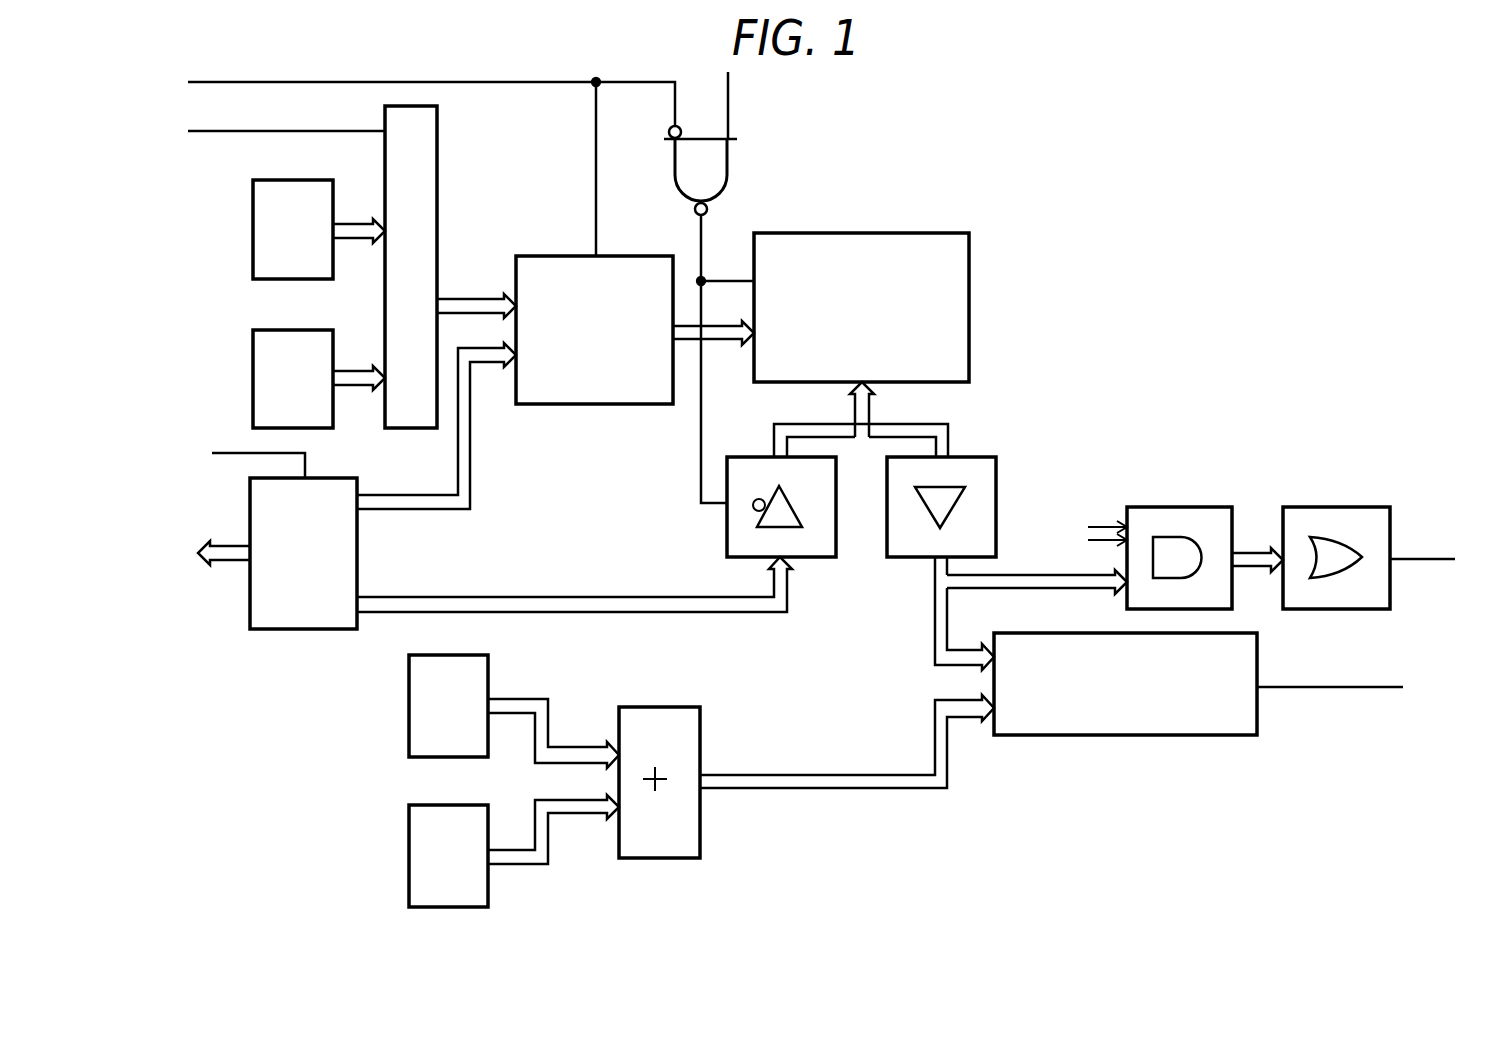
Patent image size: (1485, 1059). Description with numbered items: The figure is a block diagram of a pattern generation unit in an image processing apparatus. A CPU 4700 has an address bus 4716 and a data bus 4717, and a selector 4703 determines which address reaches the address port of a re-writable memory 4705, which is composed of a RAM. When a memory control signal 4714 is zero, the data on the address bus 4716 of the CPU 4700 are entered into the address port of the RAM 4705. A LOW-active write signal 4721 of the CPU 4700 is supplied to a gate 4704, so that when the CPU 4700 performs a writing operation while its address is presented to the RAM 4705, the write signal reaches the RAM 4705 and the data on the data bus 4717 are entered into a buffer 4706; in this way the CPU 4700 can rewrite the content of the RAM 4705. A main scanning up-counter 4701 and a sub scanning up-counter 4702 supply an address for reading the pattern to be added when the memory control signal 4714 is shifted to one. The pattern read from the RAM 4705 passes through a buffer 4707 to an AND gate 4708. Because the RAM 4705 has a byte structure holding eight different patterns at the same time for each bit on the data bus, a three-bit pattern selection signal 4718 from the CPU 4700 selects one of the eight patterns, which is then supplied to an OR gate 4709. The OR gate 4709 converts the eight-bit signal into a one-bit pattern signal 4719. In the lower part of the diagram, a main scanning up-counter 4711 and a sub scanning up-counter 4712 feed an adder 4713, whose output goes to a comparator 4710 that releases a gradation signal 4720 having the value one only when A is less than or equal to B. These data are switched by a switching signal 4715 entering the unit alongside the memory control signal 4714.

The CPU 4700 is at (305, 630).
The main scanning up-counter 4701 is at (253, 230).
The sub scanning up-counter 4702 is at (253, 380).
The selector 4703 is at (590, 404).
The gate 4704 is at (728, 170).
The re-writable memory 4705 is at (969, 305).
The buffer 4706 is at (727, 508).
The buffer 4707 is at (996, 490).
The AND gate 4708 is at (1167, 507).
The OR gate 4709 is at (1325, 507).
The comparator 4710 is at (1160, 735).
The main scanning up-counter 4711 is at (409, 710).
The sub scanning up-counter 4712 is at (409, 860).
The adder 4713 is at (655, 707).
The memory control signal 4714 is at (284, 80).
The switching signal 4715 is at (284, 130).
The address bus 4716 is at (436, 426).
The data bus 4717 is at (574, 584).
The pattern selection signal 4718 is at (629, 544).
The pattern signal 4719 is at (1415, 559).
The gradation signal 4720 is at (1318, 687).
The write signal 4721 is at (731, 92).